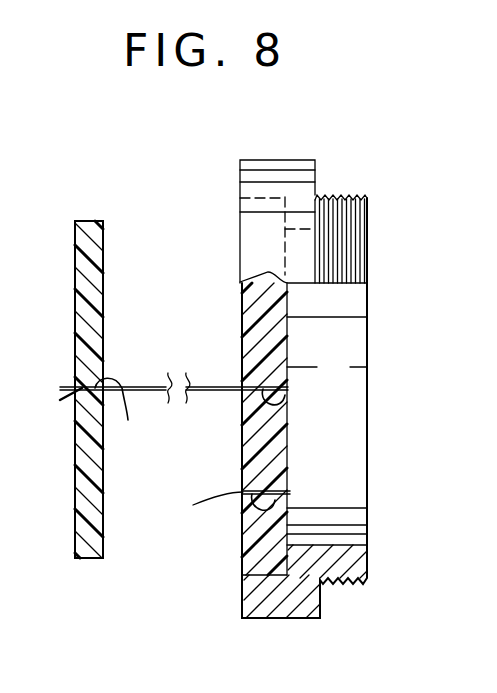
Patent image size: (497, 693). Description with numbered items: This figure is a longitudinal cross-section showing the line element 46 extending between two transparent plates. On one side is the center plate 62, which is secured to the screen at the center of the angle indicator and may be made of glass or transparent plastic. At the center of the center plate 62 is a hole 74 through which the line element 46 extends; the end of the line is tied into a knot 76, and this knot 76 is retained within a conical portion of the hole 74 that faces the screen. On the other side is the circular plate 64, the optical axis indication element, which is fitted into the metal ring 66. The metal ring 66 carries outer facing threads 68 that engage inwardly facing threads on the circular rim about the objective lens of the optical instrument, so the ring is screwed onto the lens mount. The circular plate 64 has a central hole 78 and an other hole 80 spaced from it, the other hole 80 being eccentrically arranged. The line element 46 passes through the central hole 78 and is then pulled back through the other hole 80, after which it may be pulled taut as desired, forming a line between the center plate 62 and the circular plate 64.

The line element 46 is at (143, 387).
The center plate 62 is at (75, 250).
The circular plate 64 is at (265, 538).
The metal ring 66 is at (274, 168).
The outer facing threads 68 is at (368, 212).
The hole 74 is at (127, 415).
The knot 76 is at (75, 385).
The central hole 78 is at (288, 402).
The other hole 80 is at (288, 508).